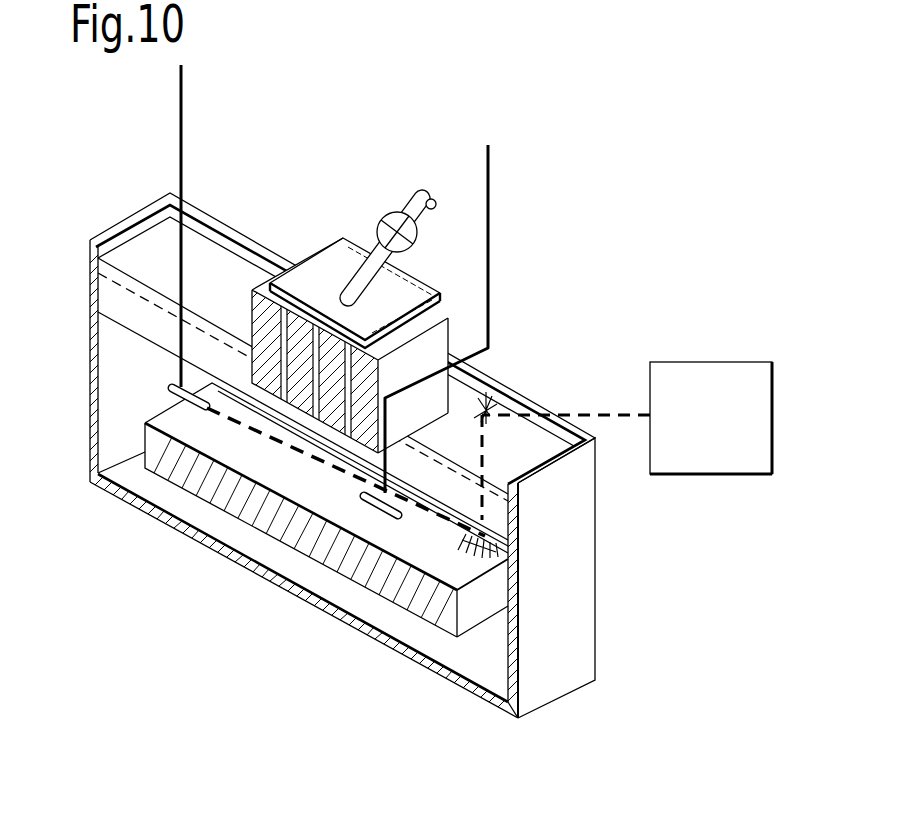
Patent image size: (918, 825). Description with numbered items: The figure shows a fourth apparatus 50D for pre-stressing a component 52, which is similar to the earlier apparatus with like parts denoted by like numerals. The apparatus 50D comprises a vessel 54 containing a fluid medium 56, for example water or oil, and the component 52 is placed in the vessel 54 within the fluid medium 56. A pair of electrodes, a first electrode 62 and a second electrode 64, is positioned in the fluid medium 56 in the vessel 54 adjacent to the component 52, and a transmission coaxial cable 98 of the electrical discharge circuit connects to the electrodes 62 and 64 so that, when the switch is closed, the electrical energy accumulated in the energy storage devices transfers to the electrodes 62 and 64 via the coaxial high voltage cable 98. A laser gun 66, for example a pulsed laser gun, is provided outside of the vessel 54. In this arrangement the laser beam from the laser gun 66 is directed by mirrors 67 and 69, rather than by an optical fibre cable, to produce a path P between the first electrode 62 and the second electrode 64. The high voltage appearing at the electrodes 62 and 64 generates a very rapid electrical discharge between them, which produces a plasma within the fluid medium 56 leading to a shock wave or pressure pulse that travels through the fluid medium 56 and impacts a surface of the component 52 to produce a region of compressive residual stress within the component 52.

The transmission coaxial cable 98 is at (183, 153).
The second electrode 64 is at (168, 405).
The first electrode 62 is at (368, 508).
The path P is at (280, 447).
The mirror 69 is at (457, 548).
The mirror 67 is at (493, 411).
The laser gun 66 is at (694, 432).
The component 52 is at (490, 598).
The vessel 54 is at (520, 690).
The fluid medium 56 is at (485, 660).
The fourth apparatus 50D is at (571, 578).